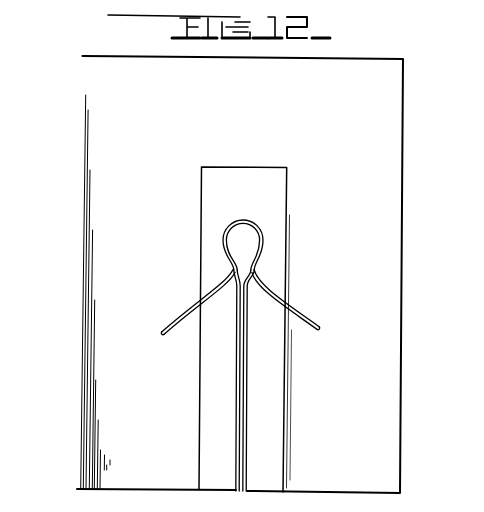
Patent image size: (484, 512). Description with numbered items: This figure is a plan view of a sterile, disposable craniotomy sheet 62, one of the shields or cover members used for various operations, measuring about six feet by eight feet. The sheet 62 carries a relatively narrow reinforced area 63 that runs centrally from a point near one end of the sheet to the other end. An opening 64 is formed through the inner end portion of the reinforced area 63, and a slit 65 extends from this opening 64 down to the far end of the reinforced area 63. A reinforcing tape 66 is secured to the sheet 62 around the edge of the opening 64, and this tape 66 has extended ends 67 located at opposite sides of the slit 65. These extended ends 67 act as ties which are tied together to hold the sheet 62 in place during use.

The craniotomy sheet 62 is at (88, 130).
The reinforced area 63 is at (240, 178).
The opening 64 is at (252, 239).
The slit 65 is at (240, 378).
The reinforcing tape 66 is at (222, 240).
The extended ends 67 is at (178, 311).